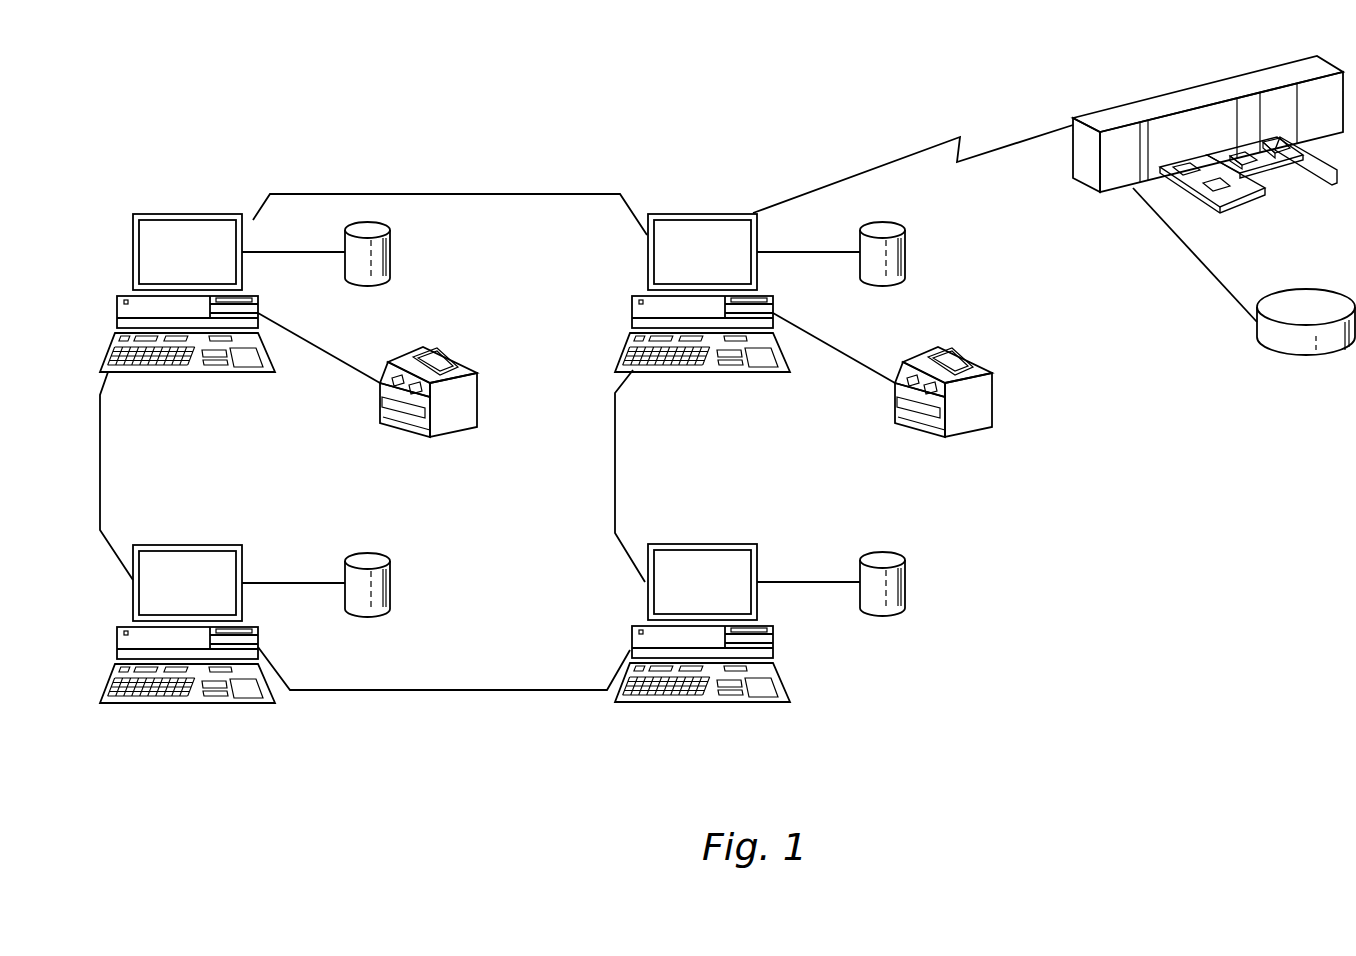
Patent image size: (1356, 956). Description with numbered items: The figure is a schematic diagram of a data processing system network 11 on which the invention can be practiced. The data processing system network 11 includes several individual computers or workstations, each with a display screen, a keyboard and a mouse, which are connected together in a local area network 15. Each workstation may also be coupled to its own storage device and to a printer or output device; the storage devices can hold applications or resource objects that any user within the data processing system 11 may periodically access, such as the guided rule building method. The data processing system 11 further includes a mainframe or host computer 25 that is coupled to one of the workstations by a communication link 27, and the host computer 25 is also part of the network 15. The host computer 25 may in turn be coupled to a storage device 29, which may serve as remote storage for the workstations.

The data processing system network 11 is at (383, 140).
The local area network 15 is at (472, 690).
The host computer 25 is at (1177, 90).
The communication link 27 is at (993, 150).
The storage device 29 is at (1297, 365).